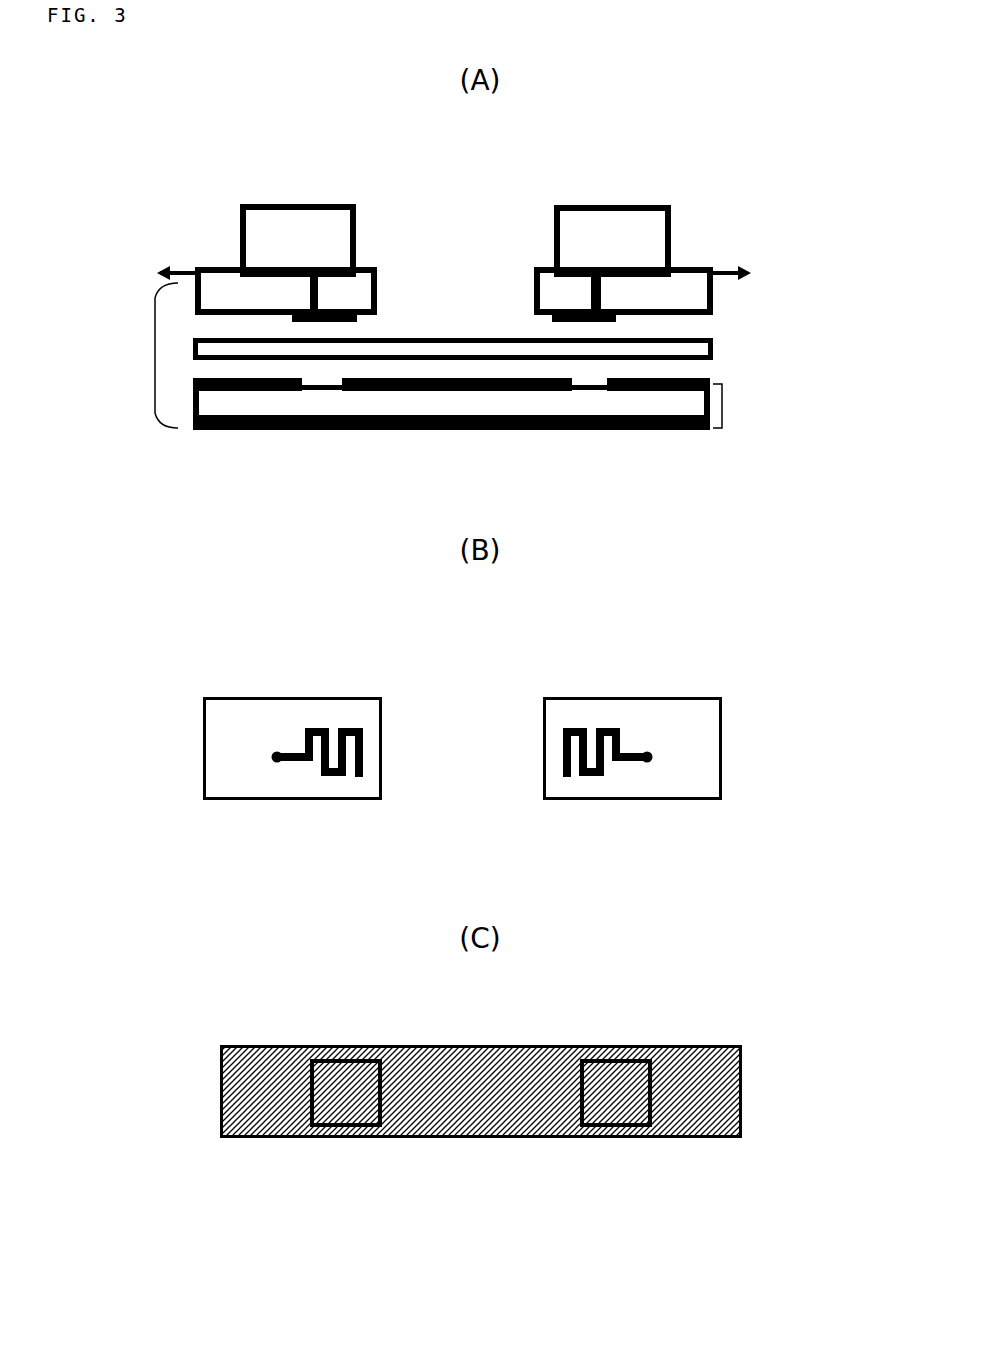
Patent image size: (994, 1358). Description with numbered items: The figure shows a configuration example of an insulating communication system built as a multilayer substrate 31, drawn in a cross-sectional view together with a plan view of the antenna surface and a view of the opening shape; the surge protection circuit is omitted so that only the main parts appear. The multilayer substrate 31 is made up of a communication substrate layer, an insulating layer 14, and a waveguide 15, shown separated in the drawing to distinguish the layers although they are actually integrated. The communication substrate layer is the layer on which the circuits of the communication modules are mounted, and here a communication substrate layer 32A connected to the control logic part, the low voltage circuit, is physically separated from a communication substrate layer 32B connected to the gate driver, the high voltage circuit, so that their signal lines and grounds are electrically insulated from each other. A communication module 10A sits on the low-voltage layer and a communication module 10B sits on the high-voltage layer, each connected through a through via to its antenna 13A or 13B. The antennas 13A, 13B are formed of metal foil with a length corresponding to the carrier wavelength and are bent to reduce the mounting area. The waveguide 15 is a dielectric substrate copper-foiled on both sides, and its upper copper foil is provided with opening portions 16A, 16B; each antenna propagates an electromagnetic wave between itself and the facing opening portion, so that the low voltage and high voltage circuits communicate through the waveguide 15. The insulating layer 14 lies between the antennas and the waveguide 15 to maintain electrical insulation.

The communication module 10A is at (265, 205).
The communication module 10B is at (595, 205).
The antenna 13A is at (352, 310).
The antenna 13B is at (563, 312).
The insulating layer 14 is at (712, 340).
The waveguide 15 is at (725, 405).
The opening portion 16A is at (322, 382).
The opening portion 16B is at (580, 385).
The multilayer substrate 31 is at (146, 355).
The communication substrate layer 32A is at (231, 303).
The communication substrate layer 32B is at (713, 297).